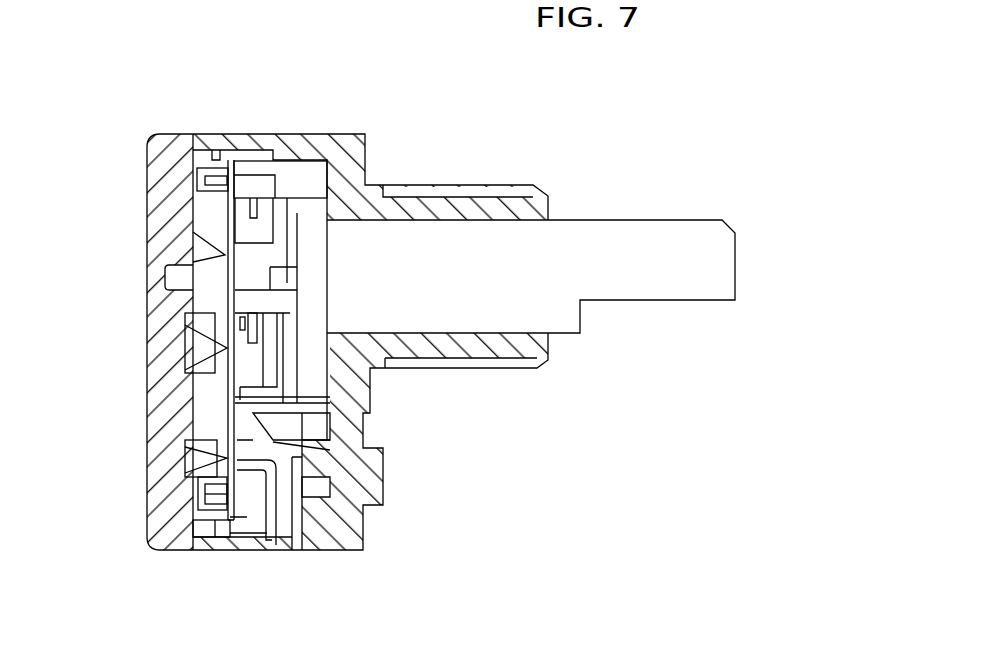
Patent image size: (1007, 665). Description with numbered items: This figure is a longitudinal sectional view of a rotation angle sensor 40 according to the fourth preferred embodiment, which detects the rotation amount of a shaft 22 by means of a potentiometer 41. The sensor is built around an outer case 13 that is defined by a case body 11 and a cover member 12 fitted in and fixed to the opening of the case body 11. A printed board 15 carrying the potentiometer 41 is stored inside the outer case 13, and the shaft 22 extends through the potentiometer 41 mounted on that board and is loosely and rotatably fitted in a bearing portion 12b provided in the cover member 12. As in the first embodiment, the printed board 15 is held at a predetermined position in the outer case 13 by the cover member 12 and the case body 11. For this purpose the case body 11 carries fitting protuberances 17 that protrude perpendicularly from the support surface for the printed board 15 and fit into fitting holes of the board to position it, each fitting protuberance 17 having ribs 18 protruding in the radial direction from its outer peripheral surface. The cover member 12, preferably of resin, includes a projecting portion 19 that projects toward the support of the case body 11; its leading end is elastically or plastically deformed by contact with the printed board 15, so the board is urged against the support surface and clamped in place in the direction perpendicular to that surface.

The rotation angle sensor 40 is at (243, 60).
The case body 11 is at (362, 525).
The cover member 12 is at (195, 420).
The bearing portion 12b is at (210, 248).
The outer case 13 is at (130, 566).
The printed board 15 is at (200, 392).
The fitting protuberance 17 is at (200, 175).
The rib 18 is at (200, 512).
The projecting portion 19 is at (200, 352).
The shaft 22 is at (622, 220).
The potentiometer 41 is at (300, 396).